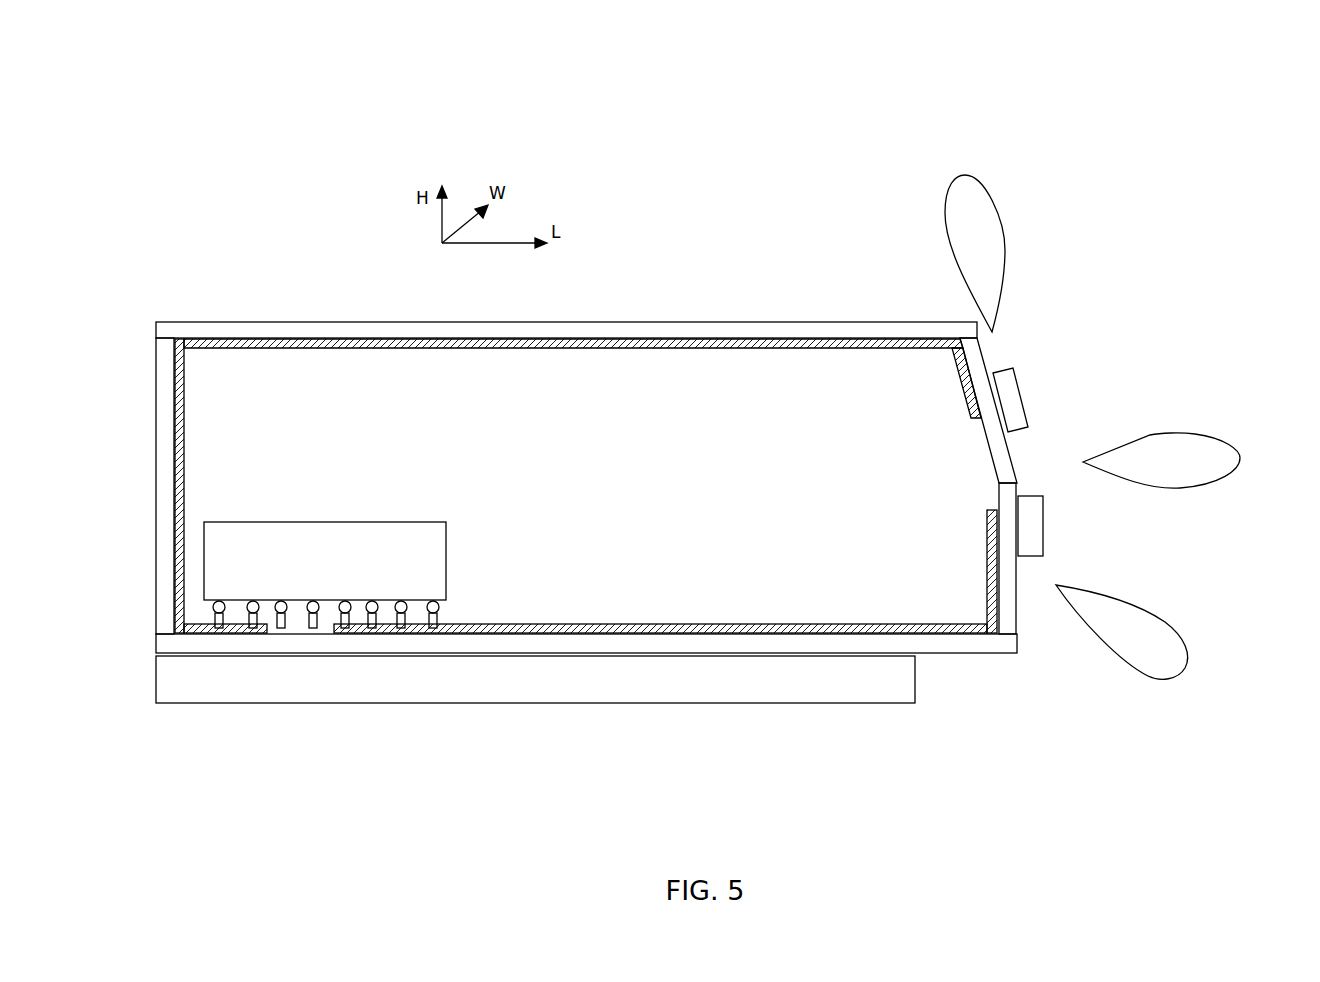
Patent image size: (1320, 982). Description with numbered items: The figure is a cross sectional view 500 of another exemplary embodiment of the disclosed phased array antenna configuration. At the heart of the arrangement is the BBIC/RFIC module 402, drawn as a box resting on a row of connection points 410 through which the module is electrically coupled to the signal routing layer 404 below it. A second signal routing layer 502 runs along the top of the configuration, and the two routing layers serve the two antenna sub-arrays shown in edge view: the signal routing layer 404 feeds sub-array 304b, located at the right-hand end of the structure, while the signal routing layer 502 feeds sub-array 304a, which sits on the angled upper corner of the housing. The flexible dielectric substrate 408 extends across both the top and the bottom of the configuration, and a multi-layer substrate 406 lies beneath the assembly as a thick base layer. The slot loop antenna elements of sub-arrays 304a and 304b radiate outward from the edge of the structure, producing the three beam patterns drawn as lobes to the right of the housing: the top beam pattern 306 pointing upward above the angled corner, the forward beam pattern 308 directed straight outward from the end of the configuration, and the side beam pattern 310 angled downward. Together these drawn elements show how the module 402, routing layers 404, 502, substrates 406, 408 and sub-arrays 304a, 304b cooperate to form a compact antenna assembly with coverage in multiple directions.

The cross sectional view 500 is at (717, 44).
The signal routing layer 502 is at (547, 348).
The BBIC/RFIC module 402 is at (359, 522).
The signal routing layer 404 is at (905, 622).
The multi-layer substrate 406 is at (490, 703).
The flexible dielectric substrate 408 is at (955, 653).
The connection points 410 is at (437, 612).
The sub-array 304a is at (1022, 392).
The sub-array 304b is at (1043, 513).
The top beam pattern 306 is at (947, 217).
The forward beam pattern 308 is at (1190, 433).
The side beam pattern 310 is at (1157, 680).